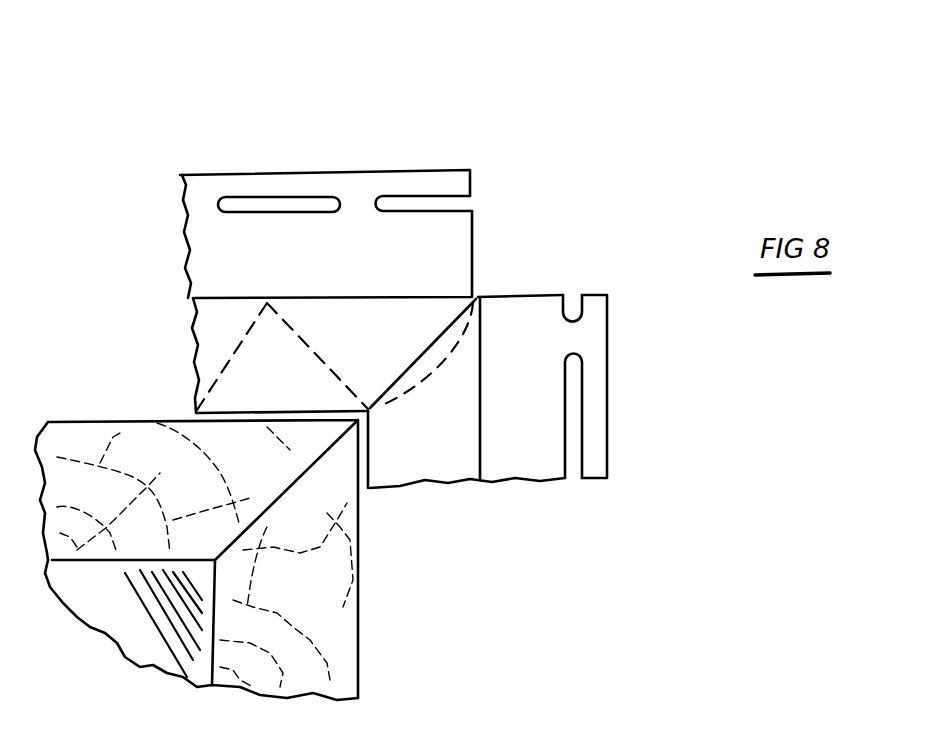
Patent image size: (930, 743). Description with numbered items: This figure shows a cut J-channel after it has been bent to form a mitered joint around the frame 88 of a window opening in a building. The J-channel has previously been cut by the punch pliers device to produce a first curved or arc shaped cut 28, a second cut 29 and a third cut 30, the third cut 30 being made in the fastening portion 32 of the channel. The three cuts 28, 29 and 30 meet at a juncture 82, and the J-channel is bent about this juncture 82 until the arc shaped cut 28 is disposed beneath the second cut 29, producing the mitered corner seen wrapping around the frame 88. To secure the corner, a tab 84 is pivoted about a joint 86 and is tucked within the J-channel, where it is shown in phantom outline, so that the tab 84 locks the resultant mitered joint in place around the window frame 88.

The first curved or arc shaped cut 28 is at (237, 362).
The second cut 29 is at (293, 332).
The third cut 30 is at (530, 293).
The fastening portion 32 is at (348, 178).
The juncture 82 is at (478, 297).
The tab 84 is at (275, 358).
The joint 86 is at (370, 410).
The frame 88 is at (325, 597).